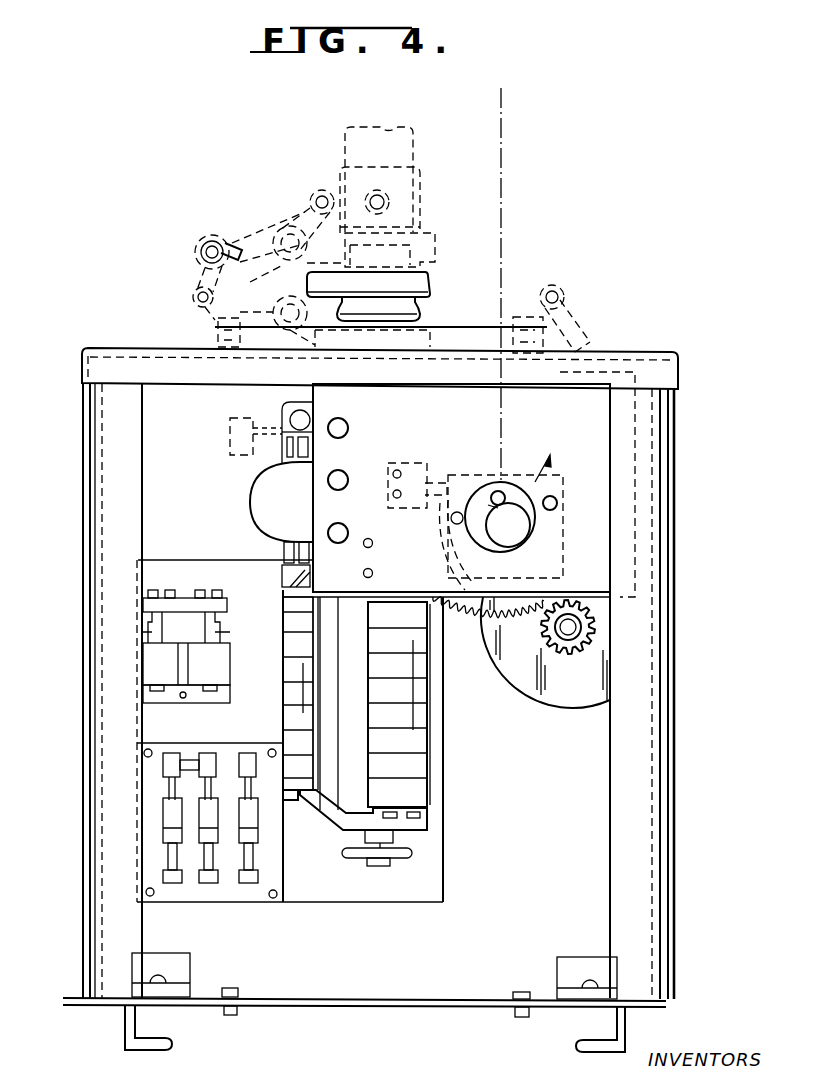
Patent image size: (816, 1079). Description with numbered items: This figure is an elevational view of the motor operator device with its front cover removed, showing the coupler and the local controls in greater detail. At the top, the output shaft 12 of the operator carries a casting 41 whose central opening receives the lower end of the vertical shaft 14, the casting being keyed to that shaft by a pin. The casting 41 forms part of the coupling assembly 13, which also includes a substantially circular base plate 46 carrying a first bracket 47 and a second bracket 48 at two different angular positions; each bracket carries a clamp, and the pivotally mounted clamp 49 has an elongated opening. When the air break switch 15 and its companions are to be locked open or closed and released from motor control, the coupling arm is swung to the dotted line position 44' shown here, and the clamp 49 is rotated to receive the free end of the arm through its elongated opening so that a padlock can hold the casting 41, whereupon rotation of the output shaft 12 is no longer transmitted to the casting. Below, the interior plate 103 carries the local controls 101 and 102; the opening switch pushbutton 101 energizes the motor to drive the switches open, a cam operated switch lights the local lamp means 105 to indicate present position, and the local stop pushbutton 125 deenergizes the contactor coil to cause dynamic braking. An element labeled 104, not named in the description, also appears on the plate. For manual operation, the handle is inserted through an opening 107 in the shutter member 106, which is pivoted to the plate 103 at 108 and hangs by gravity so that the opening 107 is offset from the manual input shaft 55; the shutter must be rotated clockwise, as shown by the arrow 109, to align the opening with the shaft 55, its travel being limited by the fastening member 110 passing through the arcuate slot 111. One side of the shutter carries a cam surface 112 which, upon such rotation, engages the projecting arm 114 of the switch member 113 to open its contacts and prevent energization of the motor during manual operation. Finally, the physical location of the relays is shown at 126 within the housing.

The output shaft 12 is at (433, 270).
The coupling assembly 13 is at (424, 181).
The vertical shaft 14 is at (402, 147).
The air break switch 15 is at (447, 725).
The casting 41 is at (423, 203).
The dotted line position of coupling arm 44' is at (283, 264).
The base plate 46 is at (473, 329).
The first bracket 47 is at (200, 320).
The second bracket 48 is at (532, 300).
The clamp 49 is at (198, 276).
The manual input shaft 55 is at (502, 492).
The opening switch pushbutton 101 is at (346, 422).
The local control 102 is at (341, 471).
The interior plate 103 is at (493, 415).
The open indicator lamp 104 is at (364, 546).
The local lamp means 105 is at (363, 574).
The shutter member 106 is at (488, 470).
The opening in shutter member 107 is at (504, 491).
The pivot 108 is at (556, 499).
The arrow 109 is at (550, 455).
The fastening member 110 is at (450, 520).
The arcuate slot 111 is at (482, 569).
The cam surface 112 is at (452, 548).
The switch member 113 is at (417, 462).
The projecting arm 114 is at (435, 486).
The local stop pushbutton 125 is at (342, 526).
The location of relays 126 is at (190, 584).